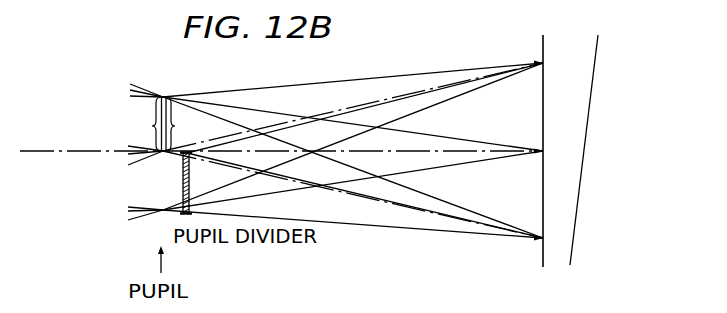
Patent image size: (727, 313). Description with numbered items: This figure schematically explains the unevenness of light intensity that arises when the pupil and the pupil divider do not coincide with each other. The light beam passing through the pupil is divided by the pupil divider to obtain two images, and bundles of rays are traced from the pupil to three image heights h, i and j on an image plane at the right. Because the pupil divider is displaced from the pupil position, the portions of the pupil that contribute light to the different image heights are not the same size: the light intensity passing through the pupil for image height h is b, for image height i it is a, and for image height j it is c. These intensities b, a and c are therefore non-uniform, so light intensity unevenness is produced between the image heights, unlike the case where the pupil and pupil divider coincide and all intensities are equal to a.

The light intensity passing through the pupil a is at (140, 124).
The light intensity passing through the pupil b is at (178, 124).
The light intensity passing through the pupil c is at (151, 124).
The image height h is at (549, 64).
The image height i is at (545, 150).
The image height j is at (545, 236).
The image plane I is at (543, 35).